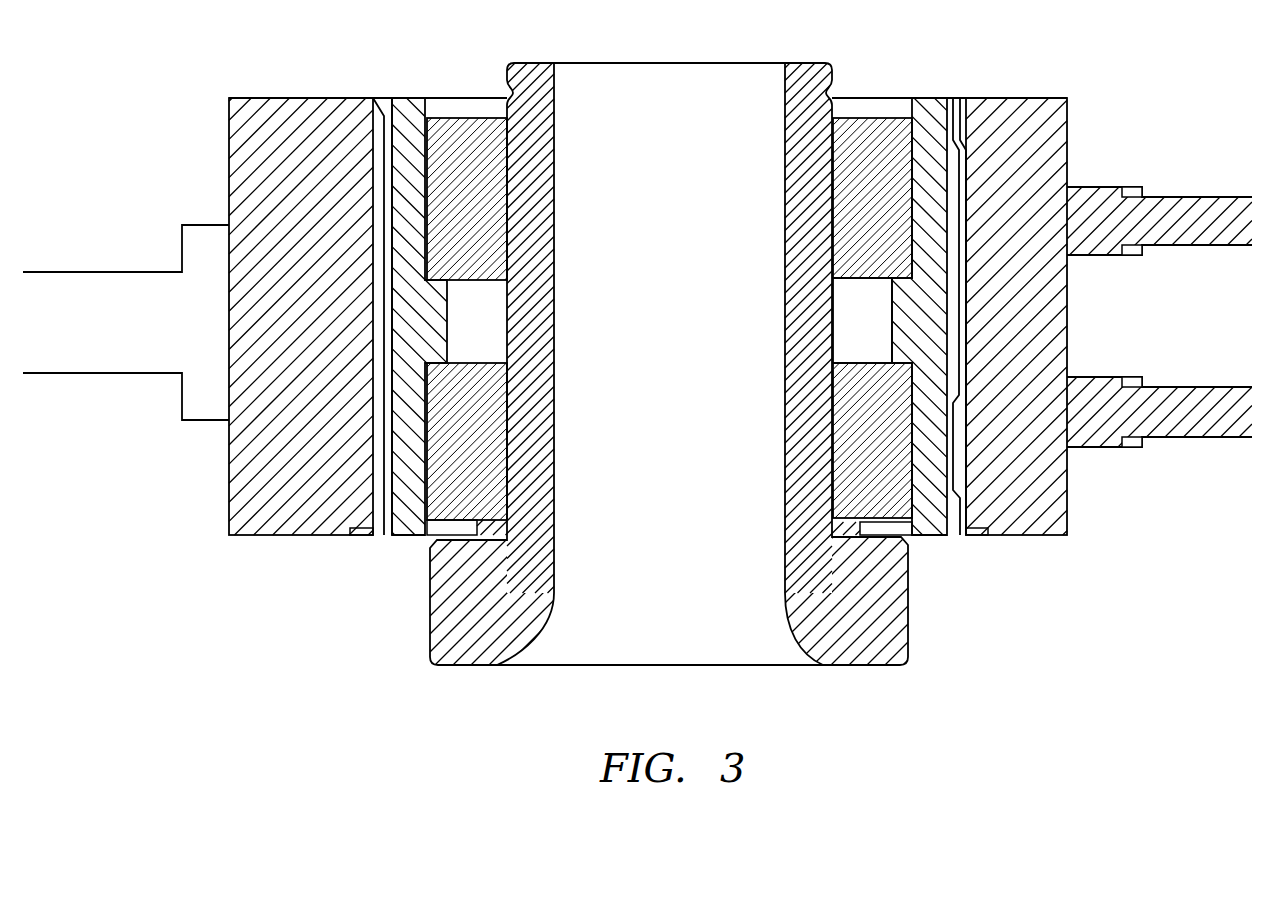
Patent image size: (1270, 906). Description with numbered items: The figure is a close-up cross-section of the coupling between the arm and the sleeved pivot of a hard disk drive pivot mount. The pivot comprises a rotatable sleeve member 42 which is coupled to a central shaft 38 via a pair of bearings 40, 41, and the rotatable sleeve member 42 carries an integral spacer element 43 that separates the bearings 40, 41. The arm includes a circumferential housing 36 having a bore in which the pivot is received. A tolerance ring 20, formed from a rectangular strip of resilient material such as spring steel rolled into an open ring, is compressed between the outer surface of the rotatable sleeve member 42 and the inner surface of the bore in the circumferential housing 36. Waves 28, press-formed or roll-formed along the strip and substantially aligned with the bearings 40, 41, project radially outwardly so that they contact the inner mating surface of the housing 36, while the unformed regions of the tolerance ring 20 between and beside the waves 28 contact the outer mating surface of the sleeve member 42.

The tolerance ring 20 is at (968, 135).
The waves 28 is at (967, 182).
The circumferential housing 36 is at (1028, 512).
The shaft 38 is at (870, 652).
The bearing 40 is at (880, 505).
The bearing 41 is at (870, 130).
The rotatable sleeve member 42 is at (930, 107).
The integral spacer element 43 is at (893, 317).